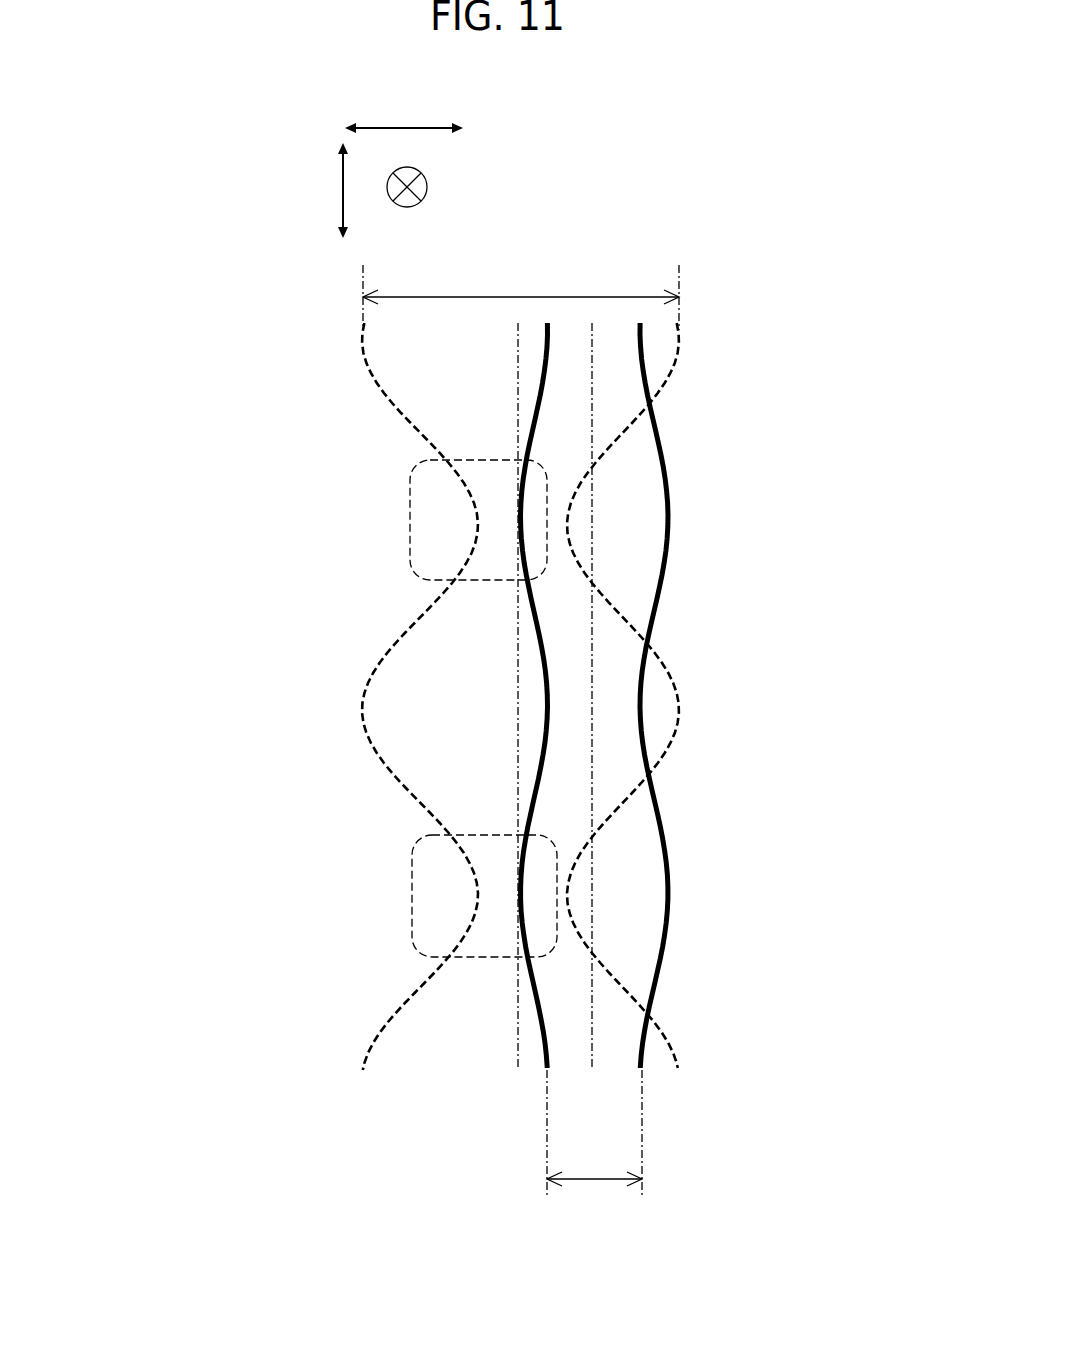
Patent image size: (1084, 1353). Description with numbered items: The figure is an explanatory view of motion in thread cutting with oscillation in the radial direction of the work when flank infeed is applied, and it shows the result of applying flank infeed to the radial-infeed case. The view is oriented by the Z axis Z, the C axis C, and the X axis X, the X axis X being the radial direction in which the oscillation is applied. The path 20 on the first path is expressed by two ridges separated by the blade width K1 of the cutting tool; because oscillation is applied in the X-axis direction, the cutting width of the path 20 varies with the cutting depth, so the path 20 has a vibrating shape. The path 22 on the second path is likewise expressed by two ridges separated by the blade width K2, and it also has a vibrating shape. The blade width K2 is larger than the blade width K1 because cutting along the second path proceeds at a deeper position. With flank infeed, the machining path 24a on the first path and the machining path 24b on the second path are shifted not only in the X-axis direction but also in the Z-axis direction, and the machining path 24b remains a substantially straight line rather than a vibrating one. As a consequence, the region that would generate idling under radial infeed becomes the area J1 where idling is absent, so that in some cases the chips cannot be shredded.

The path on the first path 20 is at (542, 384).
The path on the second path 22 is at (657, 390).
The machining path 24a is at (592, 790).
The machining path 24b is at (522, 705).
The area where idling is absent J1 is at (413, 883).
The blade width K1 is at (593, 1180).
The blade width K2 is at (508, 270).
The Z axis Z is at (382, 127).
The C axis C is at (343, 190).
The X axis X is at (427, 187).